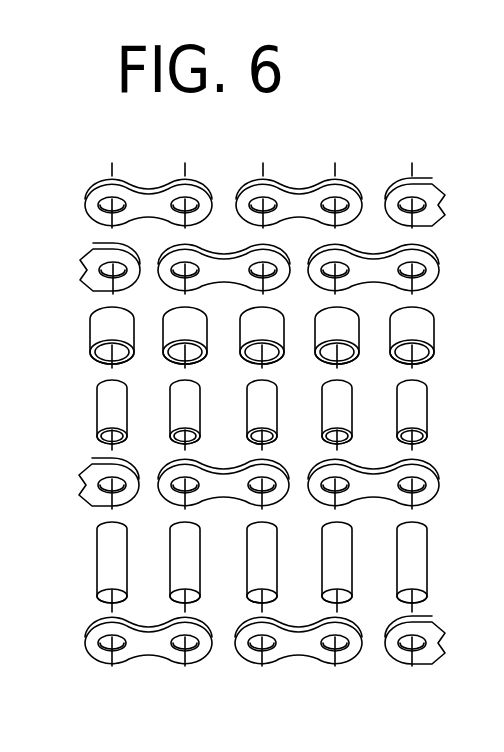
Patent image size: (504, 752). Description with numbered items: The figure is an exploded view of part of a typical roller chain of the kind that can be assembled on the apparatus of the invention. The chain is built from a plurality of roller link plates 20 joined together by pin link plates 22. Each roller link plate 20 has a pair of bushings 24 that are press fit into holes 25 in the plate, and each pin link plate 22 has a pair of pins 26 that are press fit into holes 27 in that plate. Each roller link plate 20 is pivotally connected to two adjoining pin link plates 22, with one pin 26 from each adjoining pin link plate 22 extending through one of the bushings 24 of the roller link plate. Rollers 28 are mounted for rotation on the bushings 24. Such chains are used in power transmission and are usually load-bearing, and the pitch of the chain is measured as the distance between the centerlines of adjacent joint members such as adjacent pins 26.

The roller link plate 20 is at (100, 254).
The pin link plate 22 is at (100, 204).
The bushing 24 is at (107, 408).
The hole 25 is at (261, 276).
The pin 26 is at (105, 565).
The hole 27 is at (183, 200).
The roller 28 is at (102, 330).